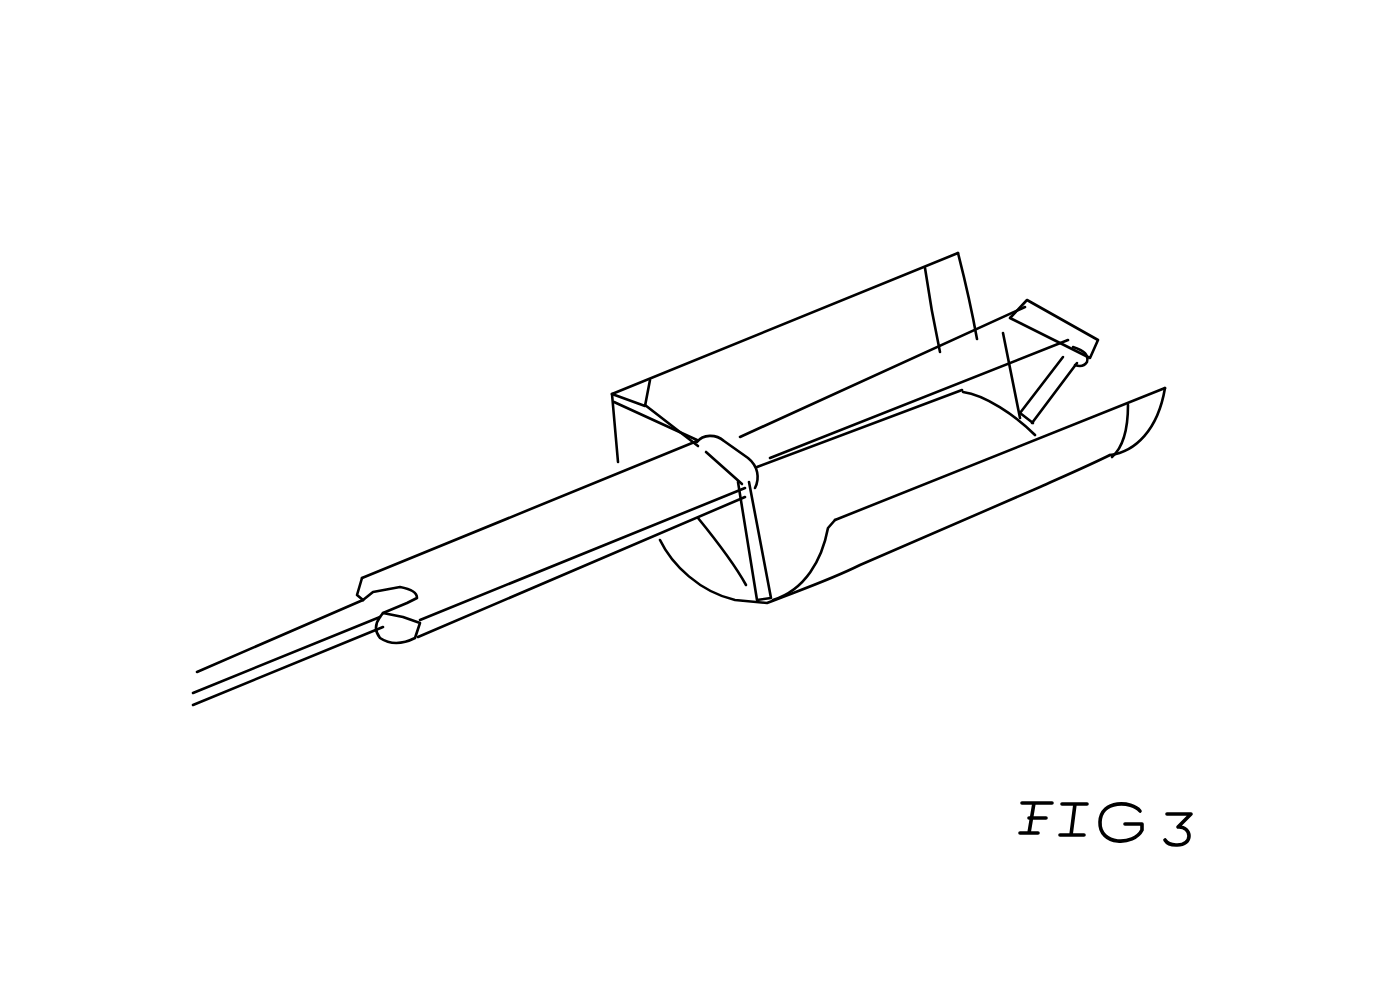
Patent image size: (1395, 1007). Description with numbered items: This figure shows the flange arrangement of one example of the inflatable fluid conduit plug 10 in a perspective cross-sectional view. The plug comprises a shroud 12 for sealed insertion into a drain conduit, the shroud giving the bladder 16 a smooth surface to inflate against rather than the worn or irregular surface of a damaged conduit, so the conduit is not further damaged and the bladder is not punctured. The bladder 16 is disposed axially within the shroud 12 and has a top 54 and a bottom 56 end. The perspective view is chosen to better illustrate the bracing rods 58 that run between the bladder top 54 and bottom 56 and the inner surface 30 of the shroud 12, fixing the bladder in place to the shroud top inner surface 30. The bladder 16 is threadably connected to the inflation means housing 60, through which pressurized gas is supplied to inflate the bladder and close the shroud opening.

The inflatable fluid conduit plug 10 is at (468, 236).
The shroud 12 is at (1108, 475).
The bladder 16 is at (905, 440).
The shroud top inner surface 30 is at (808, 368).
The bladder top end 54 is at (1004, 306).
The bladder bottom end 56 is at (735, 425).
The bracing rods 58 is at (582, 397).
The inflation means housing 60 is at (525, 642).